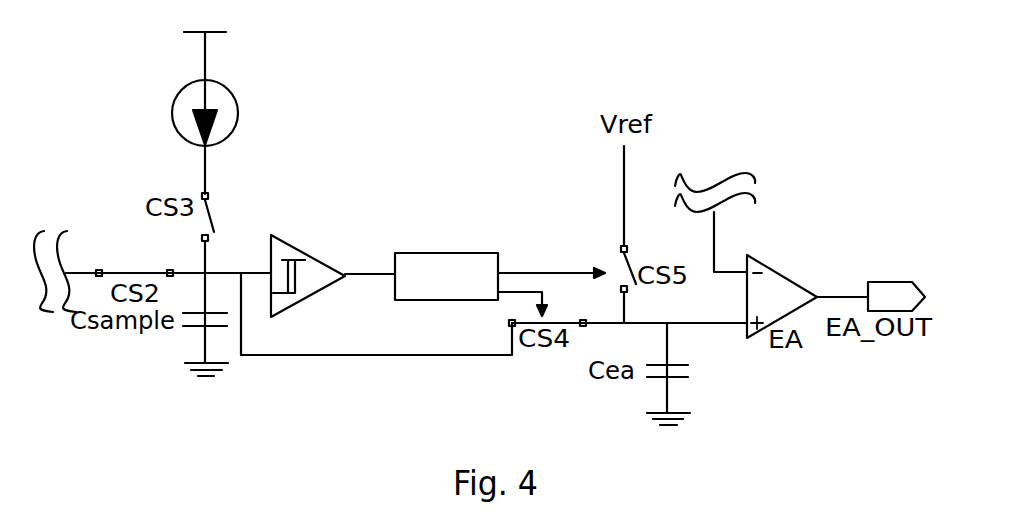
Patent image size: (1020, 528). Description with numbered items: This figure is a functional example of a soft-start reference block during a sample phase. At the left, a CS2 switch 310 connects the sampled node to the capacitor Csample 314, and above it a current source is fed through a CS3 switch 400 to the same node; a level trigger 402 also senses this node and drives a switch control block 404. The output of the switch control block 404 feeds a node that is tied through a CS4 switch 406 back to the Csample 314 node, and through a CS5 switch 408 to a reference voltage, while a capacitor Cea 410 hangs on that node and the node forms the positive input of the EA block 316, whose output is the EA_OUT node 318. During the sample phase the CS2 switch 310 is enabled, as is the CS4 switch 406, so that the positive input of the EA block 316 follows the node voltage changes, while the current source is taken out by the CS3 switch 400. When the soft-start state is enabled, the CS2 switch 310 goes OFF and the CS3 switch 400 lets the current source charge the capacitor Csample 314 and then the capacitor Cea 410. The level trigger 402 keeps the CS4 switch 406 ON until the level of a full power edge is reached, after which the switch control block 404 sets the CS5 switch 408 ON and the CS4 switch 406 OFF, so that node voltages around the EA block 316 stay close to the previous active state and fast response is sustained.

The CS2 switch 310 is at (115, 271).
The capacitor Csample 314 is at (213, 328).
The EA block 316 is at (778, 272).
The EA_OUT node 318 is at (880, 282).
The CS3 switch 400 is at (213, 216).
The level trigger 402 is at (303, 248).
The switch control block 404 is at (458, 253).
The CS4 switch 406 is at (558, 322).
The CS5 switch 408 is at (633, 263).
The capacitor Cea 410 is at (681, 366).